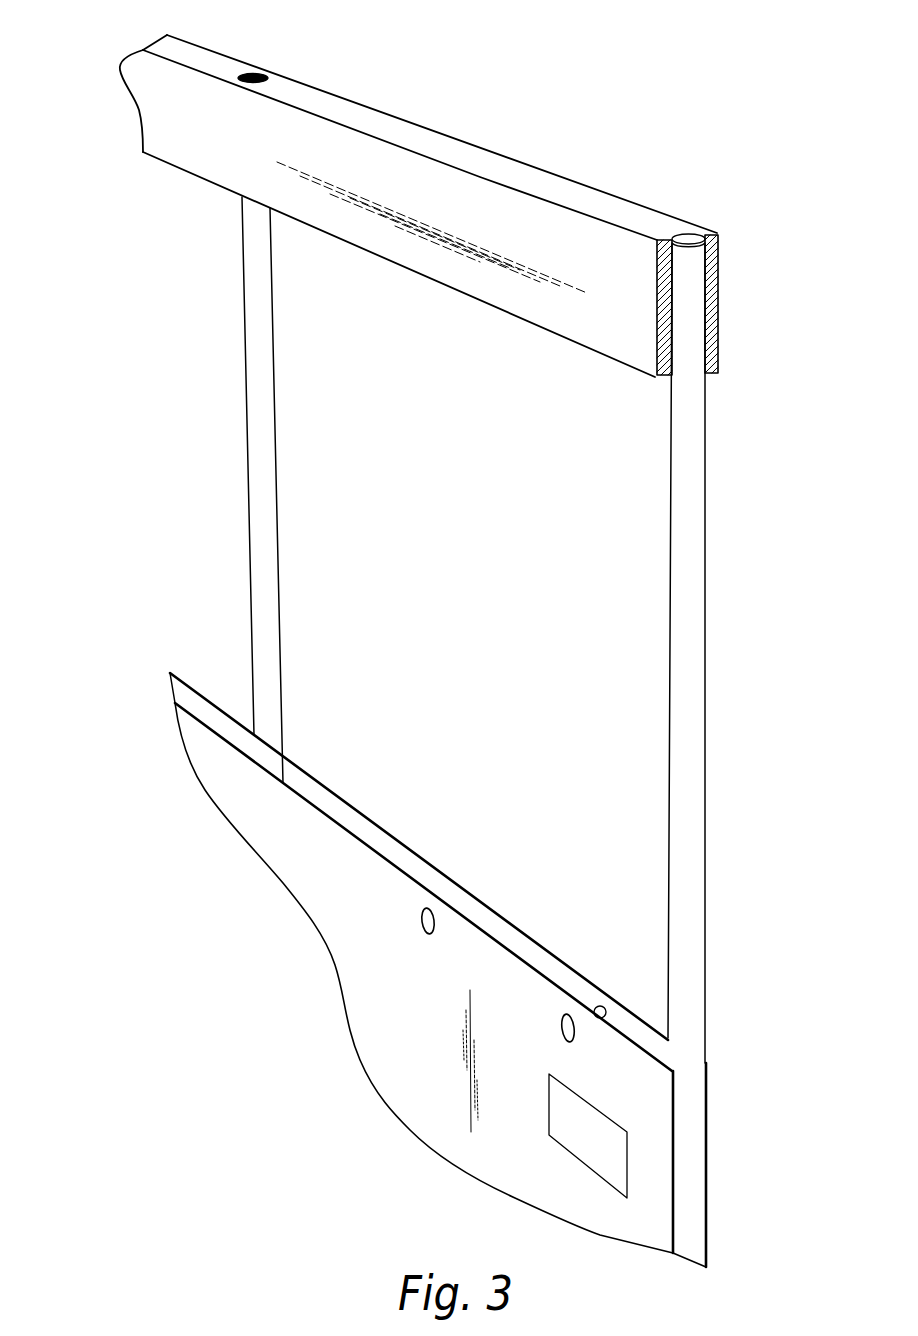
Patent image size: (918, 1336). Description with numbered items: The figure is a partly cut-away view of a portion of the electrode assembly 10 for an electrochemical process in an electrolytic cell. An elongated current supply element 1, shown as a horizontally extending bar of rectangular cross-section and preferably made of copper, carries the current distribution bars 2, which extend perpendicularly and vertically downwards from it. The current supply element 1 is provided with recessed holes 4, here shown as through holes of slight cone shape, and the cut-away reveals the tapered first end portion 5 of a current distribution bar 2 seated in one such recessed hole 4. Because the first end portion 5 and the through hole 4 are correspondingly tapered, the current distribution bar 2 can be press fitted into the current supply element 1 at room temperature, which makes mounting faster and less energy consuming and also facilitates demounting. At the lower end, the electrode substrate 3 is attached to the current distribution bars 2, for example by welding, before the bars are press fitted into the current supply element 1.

The electrode assembly 10 is at (676, 82).
The current supply element 1 is at (537, 175).
The current distribution bar 2 is at (685, 575).
The electrode substrate 3 is at (393, 1025).
The recessed hole 4 is at (253, 76).
The first end portion 5 is at (691, 303).